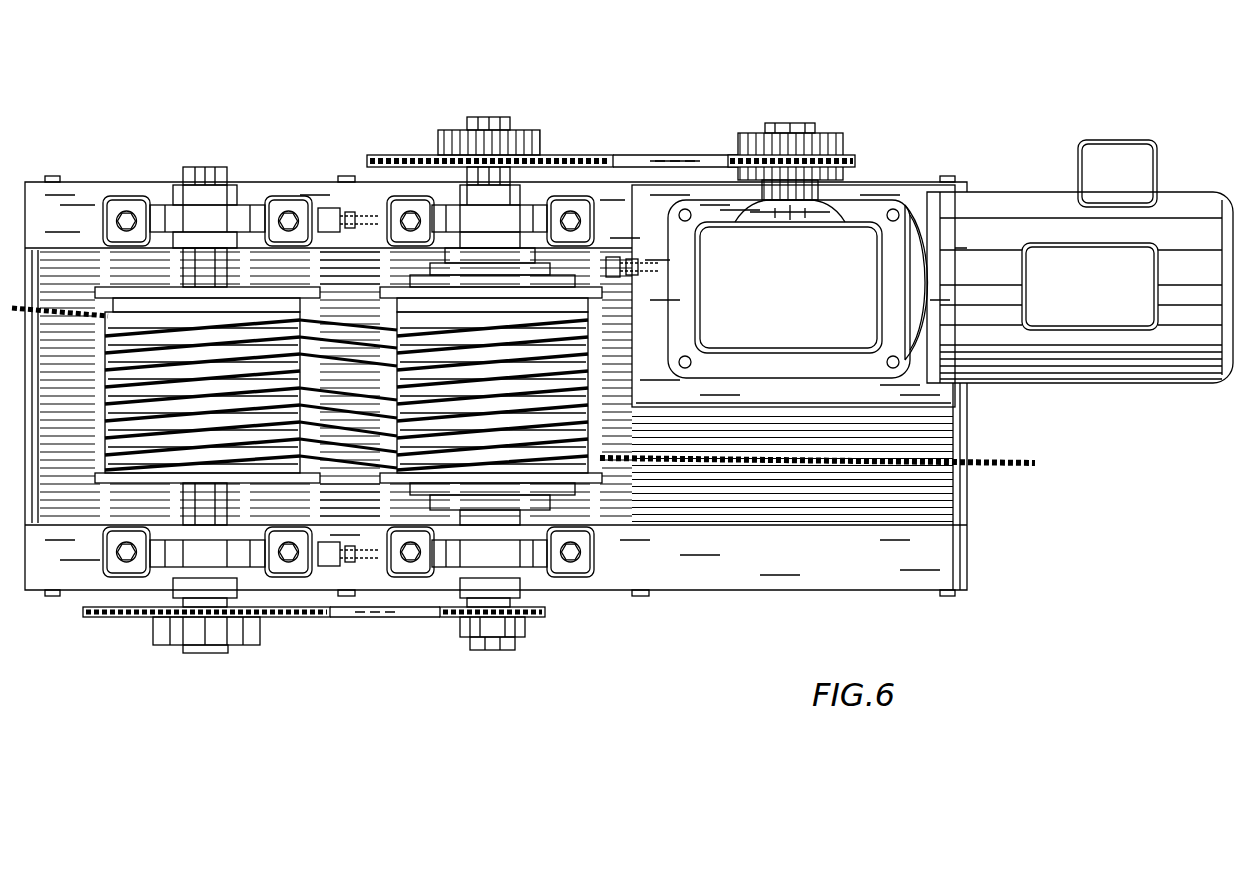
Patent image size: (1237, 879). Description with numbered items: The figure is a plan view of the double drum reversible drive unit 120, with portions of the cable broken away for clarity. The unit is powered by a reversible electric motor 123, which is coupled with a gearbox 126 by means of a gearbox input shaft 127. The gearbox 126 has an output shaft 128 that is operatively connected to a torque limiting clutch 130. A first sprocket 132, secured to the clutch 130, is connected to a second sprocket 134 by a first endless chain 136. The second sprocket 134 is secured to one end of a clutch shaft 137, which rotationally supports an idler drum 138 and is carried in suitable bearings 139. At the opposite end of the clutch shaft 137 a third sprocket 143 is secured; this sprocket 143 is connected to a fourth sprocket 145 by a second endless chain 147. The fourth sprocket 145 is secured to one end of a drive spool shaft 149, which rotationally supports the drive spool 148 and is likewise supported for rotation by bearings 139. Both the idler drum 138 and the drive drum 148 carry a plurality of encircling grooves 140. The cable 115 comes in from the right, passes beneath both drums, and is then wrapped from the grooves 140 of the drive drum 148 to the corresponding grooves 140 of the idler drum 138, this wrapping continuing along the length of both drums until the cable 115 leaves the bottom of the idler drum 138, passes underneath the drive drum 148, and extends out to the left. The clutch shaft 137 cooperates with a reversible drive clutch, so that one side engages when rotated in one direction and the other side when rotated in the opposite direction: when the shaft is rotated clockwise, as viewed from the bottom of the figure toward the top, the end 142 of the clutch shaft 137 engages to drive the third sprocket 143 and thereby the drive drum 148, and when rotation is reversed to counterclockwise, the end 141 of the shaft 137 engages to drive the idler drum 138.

The cable 115 is at (58, 308).
The double drum reversible drive unit 120 is at (366, 80).
The reversible electric motor 123 is at (1170, 212).
The gearbox 126 is at (838, 240).
The gearbox input shaft 127 is at (907, 240).
The output shaft 128 is at (831, 197).
The torque limiting clutch 130 is at (838, 150).
The first sprocket 132 is at (730, 158).
The second sprocket 134 is at (370, 155).
The first endless chain 136 is at (657, 155).
The clutch shaft 137 is at (512, 125).
The idler drum 138 is at (592, 485).
The bearings 139 is at (125, 195).
The encircling grooves 140 is at (110, 387).
The end of the shaft 141 is at (551, 142).
The end of the clutch shaft 142 is at (457, 630).
The third sprocket 143 is at (545, 612).
The fourth sprocket 145 is at (332, 618).
The second endless chain 147 is at (417, 618).
The drive spool 148 is at (97, 480).
The drive spool shaft 149 is at (212, 175).